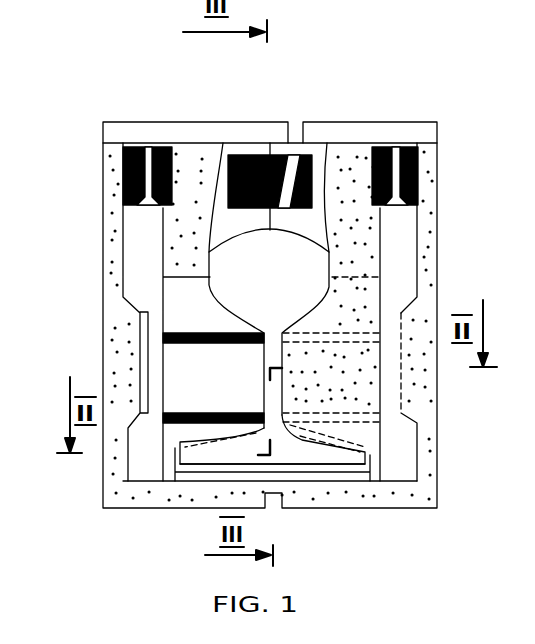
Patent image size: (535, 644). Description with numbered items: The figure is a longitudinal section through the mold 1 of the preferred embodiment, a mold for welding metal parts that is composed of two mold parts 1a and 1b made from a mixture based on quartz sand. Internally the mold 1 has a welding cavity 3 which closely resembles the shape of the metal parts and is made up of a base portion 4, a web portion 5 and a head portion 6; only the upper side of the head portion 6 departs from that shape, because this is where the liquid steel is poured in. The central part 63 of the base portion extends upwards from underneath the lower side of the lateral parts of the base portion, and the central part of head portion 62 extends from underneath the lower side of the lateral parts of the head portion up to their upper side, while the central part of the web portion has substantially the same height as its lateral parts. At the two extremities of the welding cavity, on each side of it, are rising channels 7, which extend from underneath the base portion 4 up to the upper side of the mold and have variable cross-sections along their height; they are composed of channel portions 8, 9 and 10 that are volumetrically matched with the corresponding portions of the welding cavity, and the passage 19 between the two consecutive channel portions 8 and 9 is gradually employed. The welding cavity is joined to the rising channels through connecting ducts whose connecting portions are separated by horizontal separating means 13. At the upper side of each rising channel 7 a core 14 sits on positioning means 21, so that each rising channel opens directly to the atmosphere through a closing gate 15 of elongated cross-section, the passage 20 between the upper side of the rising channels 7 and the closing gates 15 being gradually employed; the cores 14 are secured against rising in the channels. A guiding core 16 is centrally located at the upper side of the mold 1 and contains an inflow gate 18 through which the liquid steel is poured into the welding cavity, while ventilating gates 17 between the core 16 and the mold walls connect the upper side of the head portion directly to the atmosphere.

The mold 1 is at (150, 495).
The mold part 1a is at (200, 496).
The mold part 1b is at (385, 495).
The welding cavity 3 is at (300, 220).
The base portion 4 is at (378, 458).
The web portion 5 is at (287, 340).
The head portion 6 is at (332, 258).
The rising channel 7 is at (387, 385).
The channel portion 8 is at (142, 463).
The channel portion 9 is at (153, 340).
The channel portion 10 is at (145, 257).
The horizontal separating means 13 is at (187, 332).
The core 14 is at (123, 172).
The closing gate 15 is at (148, 146).
The guiding core 16 is at (275, 167).
The ventilating gate 17 is at (218, 172).
The inflow gate 18 is at (295, 150).
The passage 19 is at (408, 420).
The passage 20 is at (123, 190).
The positioning means 21 is at (123, 216).
The central part of head portion 62 is at (380, 278).
The central part of base portion 63 is at (313, 474).